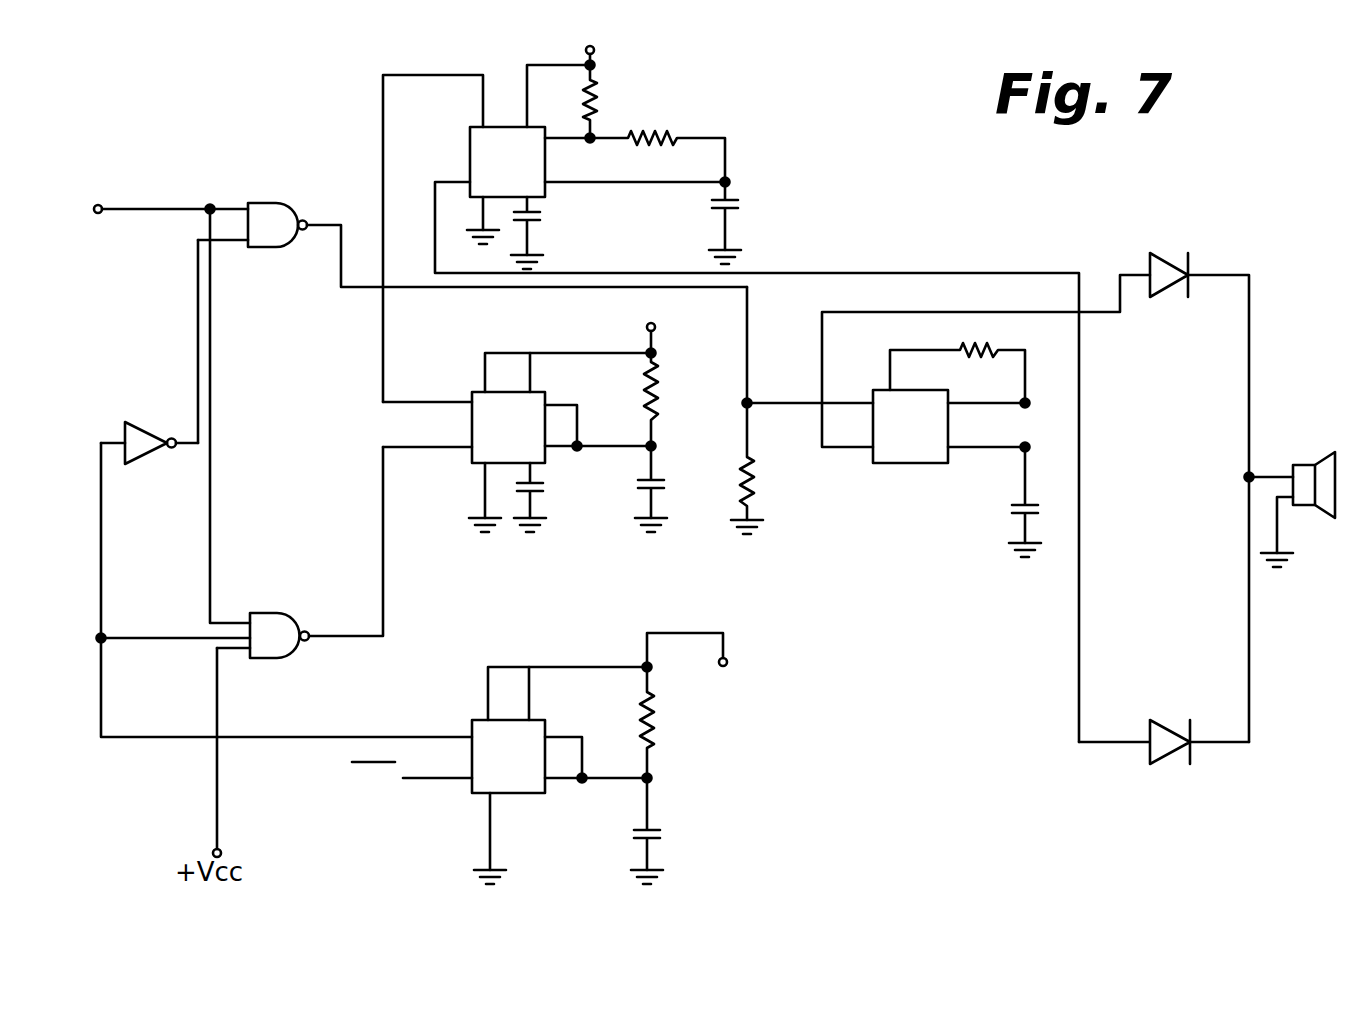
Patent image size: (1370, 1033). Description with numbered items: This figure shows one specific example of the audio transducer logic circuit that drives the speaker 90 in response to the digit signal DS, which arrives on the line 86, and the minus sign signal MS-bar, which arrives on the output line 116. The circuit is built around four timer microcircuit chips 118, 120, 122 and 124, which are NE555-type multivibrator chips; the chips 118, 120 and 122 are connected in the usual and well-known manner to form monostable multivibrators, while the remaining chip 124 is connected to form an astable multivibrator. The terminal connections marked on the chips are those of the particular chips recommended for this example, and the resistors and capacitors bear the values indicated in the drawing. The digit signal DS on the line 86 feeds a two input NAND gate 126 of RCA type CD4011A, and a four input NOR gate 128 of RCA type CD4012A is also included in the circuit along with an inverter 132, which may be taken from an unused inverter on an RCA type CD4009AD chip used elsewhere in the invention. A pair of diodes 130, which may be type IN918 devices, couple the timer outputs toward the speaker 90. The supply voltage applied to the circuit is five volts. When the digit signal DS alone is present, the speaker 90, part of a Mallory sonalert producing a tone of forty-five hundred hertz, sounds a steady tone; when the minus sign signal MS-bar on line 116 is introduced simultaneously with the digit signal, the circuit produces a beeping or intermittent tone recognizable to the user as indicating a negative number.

The line 86 is at (136, 207).
The speaker 90 is at (1303, 463).
The output line 116 is at (443, 783).
The timer microcircuit chip 118 is at (470, 462).
The timer microcircuit chip 120 is at (518, 793).
The timer microcircuit chip 122 is at (894, 465).
The timer microcircuit chip 124 is at (470, 153).
The two input NAND gate 126 is at (283, 201).
The four input NOR gate 128 is at (285, 614).
The diodes 130 is at (1160, 251).
The inverter 132 is at (146, 461).